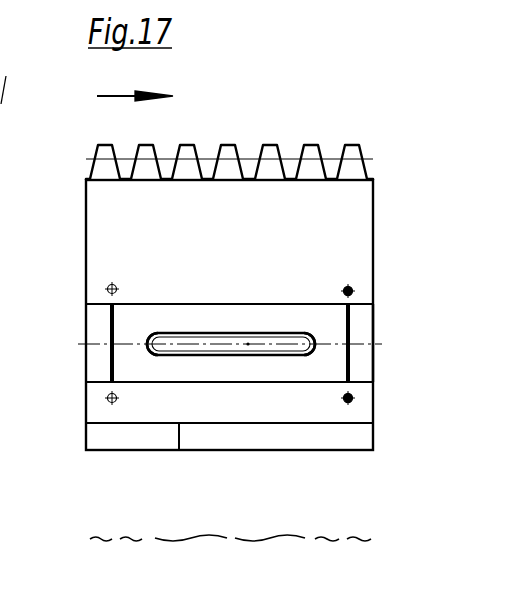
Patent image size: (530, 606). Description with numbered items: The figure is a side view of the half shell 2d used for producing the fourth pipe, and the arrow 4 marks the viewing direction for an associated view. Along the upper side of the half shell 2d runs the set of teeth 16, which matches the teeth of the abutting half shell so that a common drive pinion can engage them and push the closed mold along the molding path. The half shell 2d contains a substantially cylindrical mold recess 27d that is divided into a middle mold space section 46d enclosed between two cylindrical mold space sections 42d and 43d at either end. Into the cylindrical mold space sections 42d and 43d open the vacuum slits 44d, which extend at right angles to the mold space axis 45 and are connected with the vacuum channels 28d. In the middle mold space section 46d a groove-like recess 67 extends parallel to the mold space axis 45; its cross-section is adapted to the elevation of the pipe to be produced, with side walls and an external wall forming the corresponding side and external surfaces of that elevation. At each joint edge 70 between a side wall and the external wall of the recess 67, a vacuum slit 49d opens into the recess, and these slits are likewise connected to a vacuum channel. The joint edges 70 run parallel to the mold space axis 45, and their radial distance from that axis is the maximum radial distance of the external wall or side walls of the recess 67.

The half shell 2d is at (388, 150).
The direction arrow 4 is at (135, 79).
The set of teeth 16 is at (271, 148).
The mold recess 27d is at (367, 330).
The vacuum channels 28d is at (110, 285).
The mold space section 42d is at (134, 506).
The mold space section 43d is at (344, 563).
The vacuum slits 44d is at (110, 323).
The mold space axis 45 is at (97, 349).
The mold space section 46d is at (230, 562).
The vacuum slit 49d is at (218, 335).
The groove-like recess 67 is at (249, 346).
The joint edge 70 is at (150, 333).